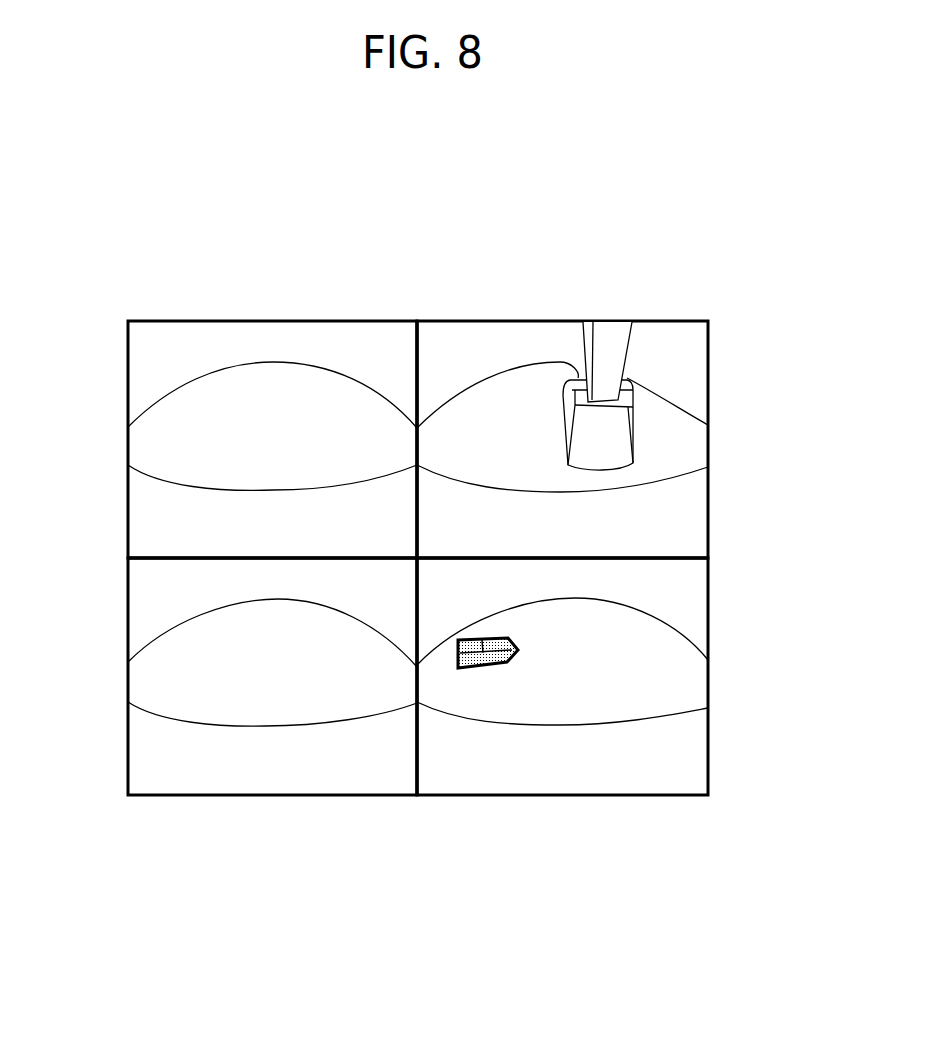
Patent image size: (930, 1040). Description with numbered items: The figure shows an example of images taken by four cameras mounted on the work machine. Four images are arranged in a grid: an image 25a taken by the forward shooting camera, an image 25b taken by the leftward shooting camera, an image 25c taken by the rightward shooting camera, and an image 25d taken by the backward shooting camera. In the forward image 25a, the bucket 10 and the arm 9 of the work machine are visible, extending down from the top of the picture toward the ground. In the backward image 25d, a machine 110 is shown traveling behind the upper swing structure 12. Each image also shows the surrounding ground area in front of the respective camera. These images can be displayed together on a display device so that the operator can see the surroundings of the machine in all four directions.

The image 25a is at (593, 320).
The image 25b is at (290, 320).
The image 25c is at (252, 796).
The image 25d is at (627, 797).
The arm 9 is at (627, 350).
The bucket 10 is at (637, 427).
The upper swing structure 12 is at (163, 510).
The machine 110 is at (470, 672).